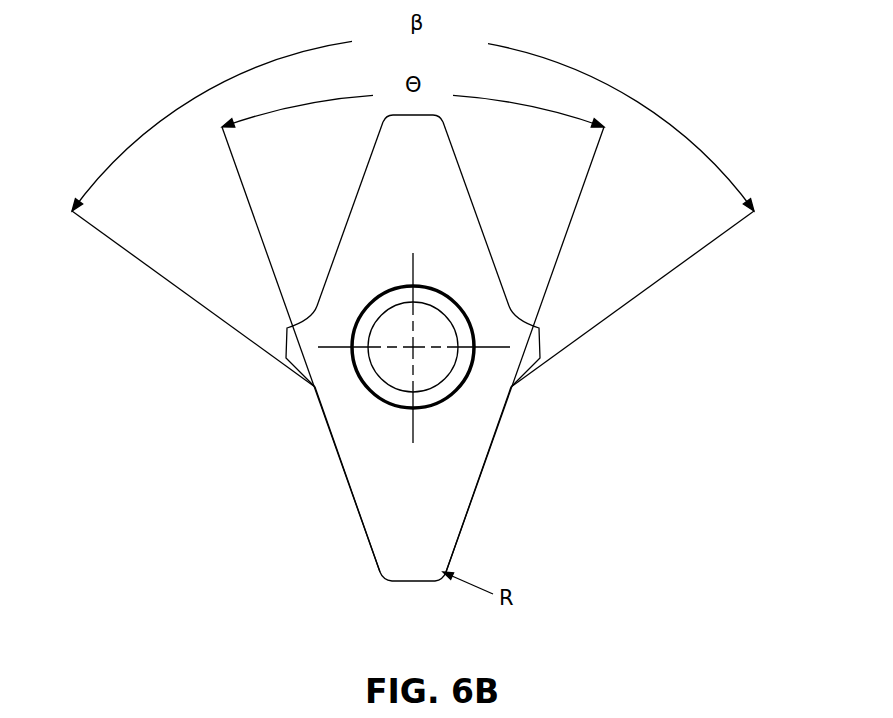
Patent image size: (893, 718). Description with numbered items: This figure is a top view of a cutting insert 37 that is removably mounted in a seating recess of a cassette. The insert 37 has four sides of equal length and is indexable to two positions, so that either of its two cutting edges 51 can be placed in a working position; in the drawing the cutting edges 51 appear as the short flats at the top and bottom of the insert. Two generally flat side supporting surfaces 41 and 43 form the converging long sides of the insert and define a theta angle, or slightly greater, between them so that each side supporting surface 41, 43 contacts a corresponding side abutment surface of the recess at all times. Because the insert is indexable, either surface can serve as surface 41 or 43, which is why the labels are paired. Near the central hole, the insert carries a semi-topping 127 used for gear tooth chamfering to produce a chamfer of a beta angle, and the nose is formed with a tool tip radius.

The cutting insert 37 is at (283, 426).
The side supporting surface 41 is at (343, 243).
The side supporting surface 43 is at (483, 237).
The cutting edge 51 is at (390, 119).
The semi-topping 127 is at (527, 363).